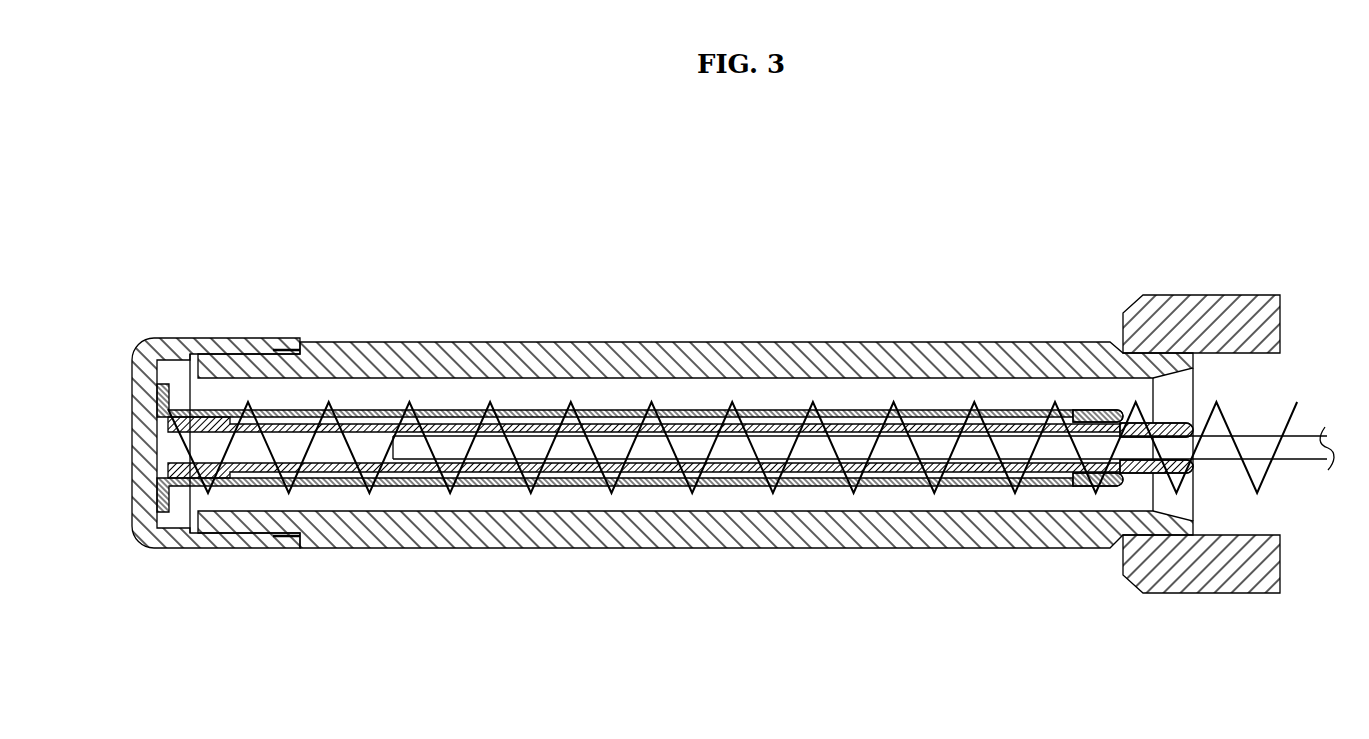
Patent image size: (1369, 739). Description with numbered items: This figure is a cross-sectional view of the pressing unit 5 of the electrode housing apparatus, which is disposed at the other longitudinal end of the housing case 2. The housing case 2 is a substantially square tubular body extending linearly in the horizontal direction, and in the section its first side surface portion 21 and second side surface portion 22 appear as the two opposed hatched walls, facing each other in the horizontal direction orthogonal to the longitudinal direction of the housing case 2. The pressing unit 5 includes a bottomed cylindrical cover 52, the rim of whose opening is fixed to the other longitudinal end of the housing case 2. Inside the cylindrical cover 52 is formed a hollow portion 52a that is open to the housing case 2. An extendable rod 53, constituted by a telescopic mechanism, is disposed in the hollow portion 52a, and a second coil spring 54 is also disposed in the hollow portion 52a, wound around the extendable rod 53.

The housing case 2 is at (1201, 440).
The first side surface portion 21 is at (1202, 595).
The second side surface portion 22 is at (1230, 295).
The pressing unit 5 is at (733, 391).
The cylindrical cover 52 is at (910, 340).
The hollow portion 52a is at (997, 384).
The extendable rod 53 is at (613, 398).
The second coil spring 54 is at (733, 424).